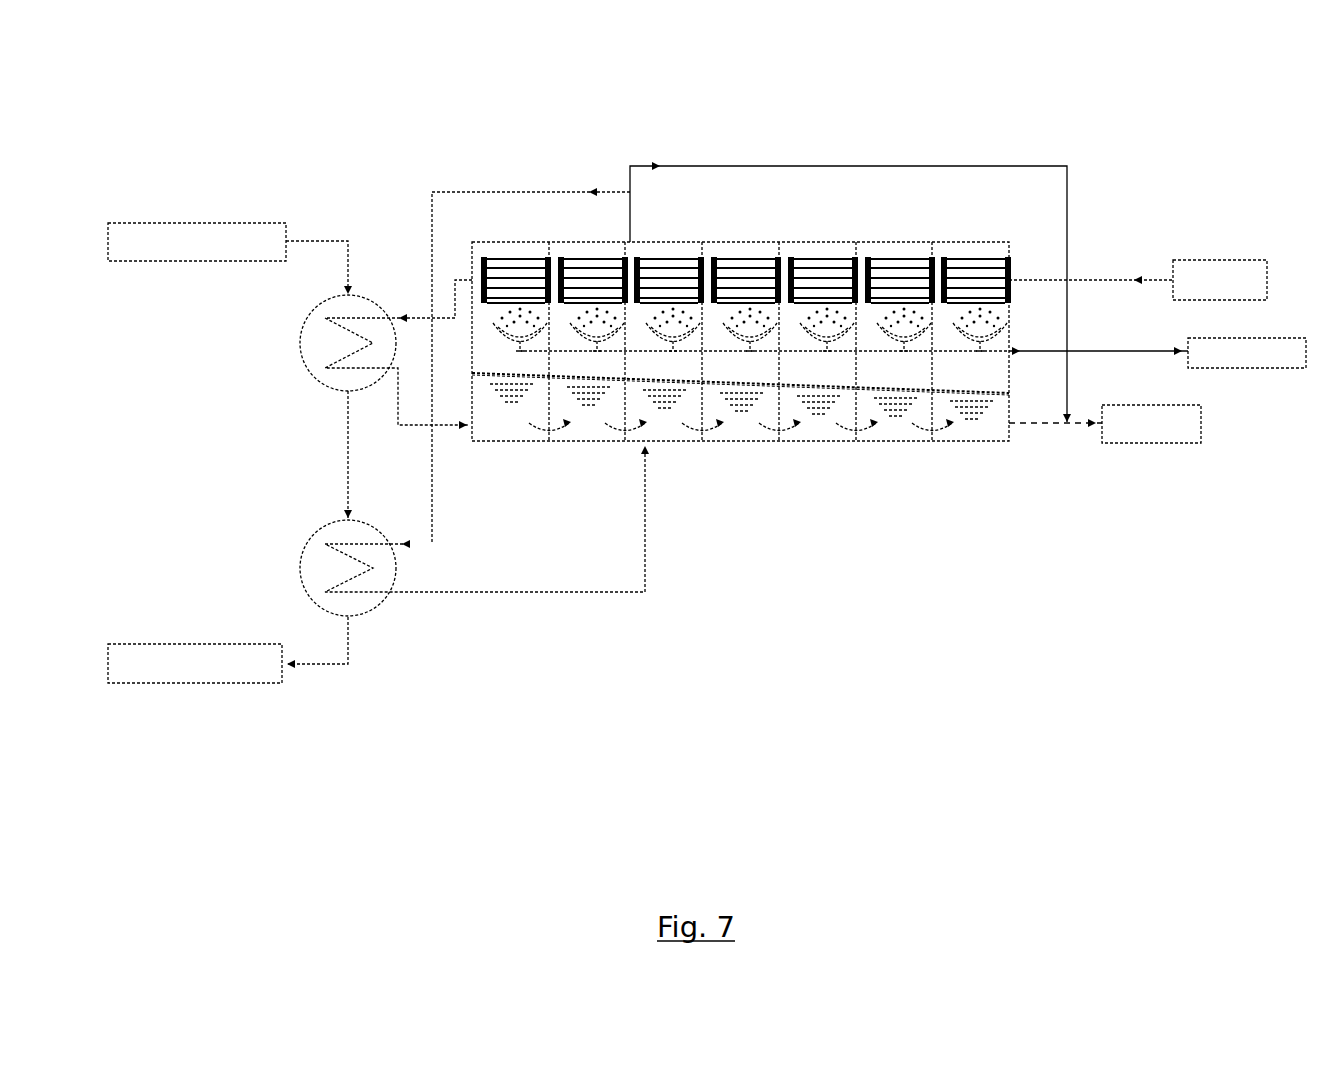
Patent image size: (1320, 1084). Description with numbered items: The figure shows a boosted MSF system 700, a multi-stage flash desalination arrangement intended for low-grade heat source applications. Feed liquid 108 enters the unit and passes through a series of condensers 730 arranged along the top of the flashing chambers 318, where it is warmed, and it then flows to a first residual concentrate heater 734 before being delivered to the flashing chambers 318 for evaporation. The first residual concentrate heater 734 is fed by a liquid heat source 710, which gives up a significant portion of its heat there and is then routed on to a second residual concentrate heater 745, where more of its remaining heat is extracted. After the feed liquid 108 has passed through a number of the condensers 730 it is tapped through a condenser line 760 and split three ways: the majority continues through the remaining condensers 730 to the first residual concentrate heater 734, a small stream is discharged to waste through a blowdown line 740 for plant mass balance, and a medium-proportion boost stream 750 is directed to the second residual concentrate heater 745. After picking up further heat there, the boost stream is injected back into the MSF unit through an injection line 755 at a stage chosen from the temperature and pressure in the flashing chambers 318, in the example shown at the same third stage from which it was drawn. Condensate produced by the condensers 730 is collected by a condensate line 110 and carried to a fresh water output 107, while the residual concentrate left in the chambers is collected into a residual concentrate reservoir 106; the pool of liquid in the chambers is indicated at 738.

The boosted MSF system 700 is at (717, 81).
The liquid heat source 710 is at (230, 258).
The first residual concentrate heater 734 is at (311, 370).
The second residual concentrate heater 745 is at (327, 592).
The condenser line 760 is at (470, 282).
The boost stream 750 is at (485, 193).
The injection line 755 is at (595, 590).
The blowdown line 740 is at (813, 166).
The condensers 730 is at (973, 288).
The condensate line 110 is at (927, 353).
The flashing chambers 318 is at (610, 370).
The water basin / sump 738 is at (822, 420).
The feed liquid 108 is at (1138, 280).
The fresh water output 107 is at (1157, 353).
The residual concentrate reservoir 106 is at (1105, 424).